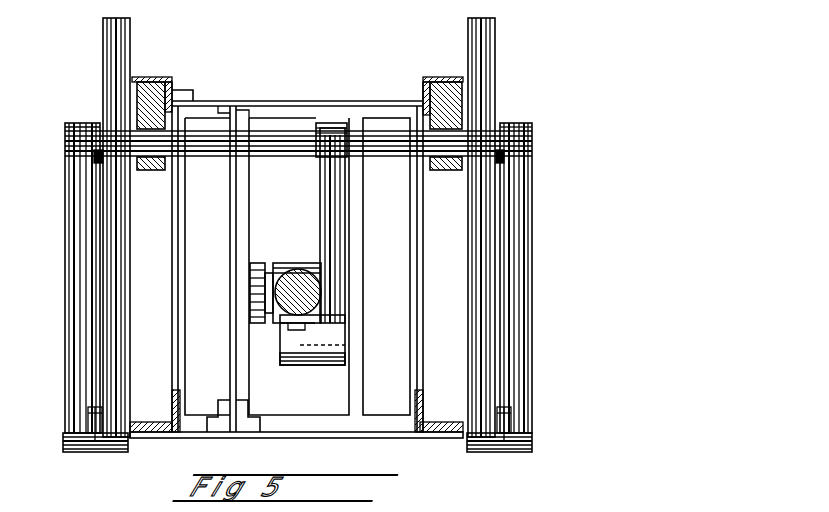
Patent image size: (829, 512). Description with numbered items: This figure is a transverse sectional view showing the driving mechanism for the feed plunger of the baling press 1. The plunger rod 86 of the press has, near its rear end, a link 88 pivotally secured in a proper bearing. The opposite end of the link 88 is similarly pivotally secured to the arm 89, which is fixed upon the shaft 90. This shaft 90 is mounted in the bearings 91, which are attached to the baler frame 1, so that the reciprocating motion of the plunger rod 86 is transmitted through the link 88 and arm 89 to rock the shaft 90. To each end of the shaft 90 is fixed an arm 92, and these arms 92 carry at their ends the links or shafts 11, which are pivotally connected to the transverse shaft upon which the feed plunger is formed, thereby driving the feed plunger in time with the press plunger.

The baling press 1 is at (136, 79).
The drive bar 11 is at (110, 48).
The plunger rod 86 is at (292, 284).
The link 88 is at (335, 350).
The arm 89 is at (328, 180).
The shaft 90 is at (227, 152).
The bearings 91 is at (147, 110).
The arm 92 is at (78, 250).